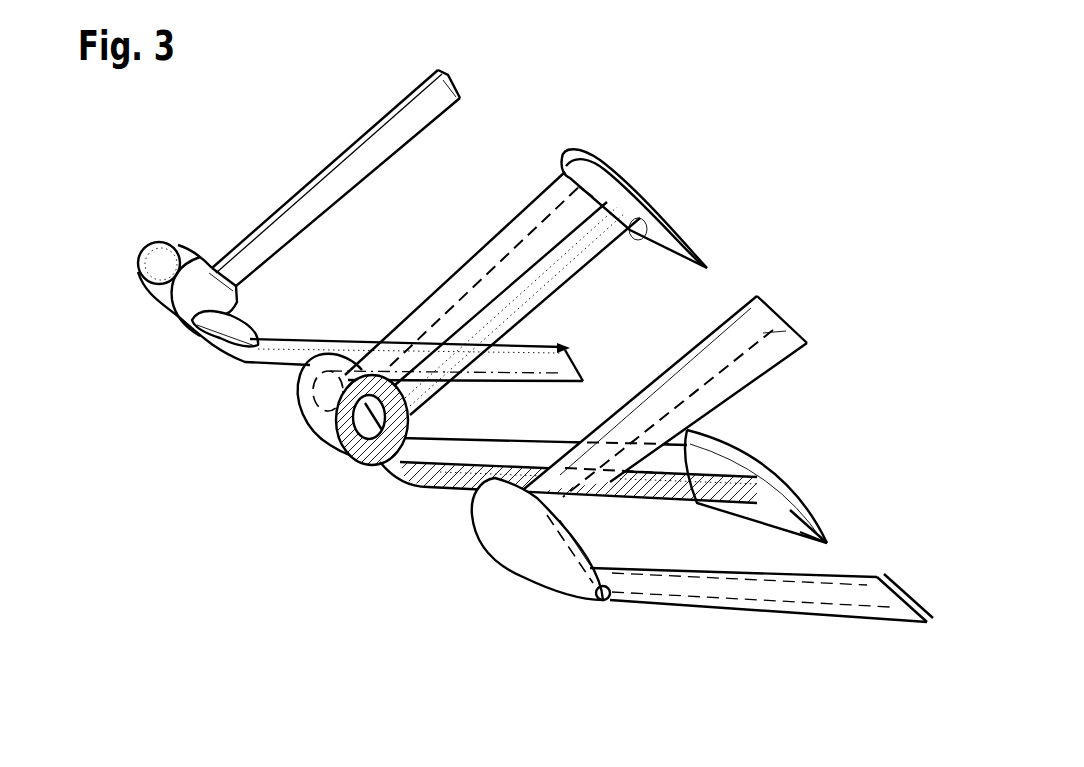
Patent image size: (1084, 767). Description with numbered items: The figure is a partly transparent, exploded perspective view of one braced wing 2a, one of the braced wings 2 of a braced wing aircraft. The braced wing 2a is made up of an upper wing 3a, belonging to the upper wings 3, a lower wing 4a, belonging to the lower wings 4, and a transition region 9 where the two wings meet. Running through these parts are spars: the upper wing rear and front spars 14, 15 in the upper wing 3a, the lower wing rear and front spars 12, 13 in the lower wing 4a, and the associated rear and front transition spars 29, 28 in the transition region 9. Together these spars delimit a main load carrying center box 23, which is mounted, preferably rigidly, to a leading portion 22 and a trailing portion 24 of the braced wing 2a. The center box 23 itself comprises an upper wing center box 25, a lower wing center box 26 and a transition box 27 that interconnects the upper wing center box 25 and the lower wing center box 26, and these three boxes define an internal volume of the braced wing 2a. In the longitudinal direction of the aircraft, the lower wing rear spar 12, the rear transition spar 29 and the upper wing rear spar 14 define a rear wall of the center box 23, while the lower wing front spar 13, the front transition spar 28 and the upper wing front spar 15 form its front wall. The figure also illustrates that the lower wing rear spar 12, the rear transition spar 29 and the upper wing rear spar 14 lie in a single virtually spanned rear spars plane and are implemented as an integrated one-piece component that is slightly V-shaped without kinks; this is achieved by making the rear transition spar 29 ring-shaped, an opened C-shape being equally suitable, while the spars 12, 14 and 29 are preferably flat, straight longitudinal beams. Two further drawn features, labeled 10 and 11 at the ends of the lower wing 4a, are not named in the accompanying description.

The braced wings 2 is at (248, 195).
The braced wing 2a is at (340, 147).
The second tube 3 is at (764, 385).
The upper wing 3a is at (223, 249).
The strip 4 is at (322, 338).
The lower wing 4a is at (663, 603).
The transition region 9 is at (132, 240).
The flange 10 is at (630, 176).
The tip 11 is at (820, 530).
The lower wing rear spar 12 is at (710, 489).
The lower wing front spar 13 is at (550, 442).
The upper wing rear spar 14 is at (578, 257).
The upper wing front spar 15 is at (425, 302).
The leading portion 22 is at (183, 336).
The main load carrying center box 23 is at (295, 452).
The trailing portion 24 is at (480, 560).
The upper wing center box 25 is at (510, 272).
The lower wing center box 26 is at (458, 455).
The transition box 27 is at (322, 430).
The front transition spar 28 is at (300, 390).
The rear transition spar 29 is at (375, 465).